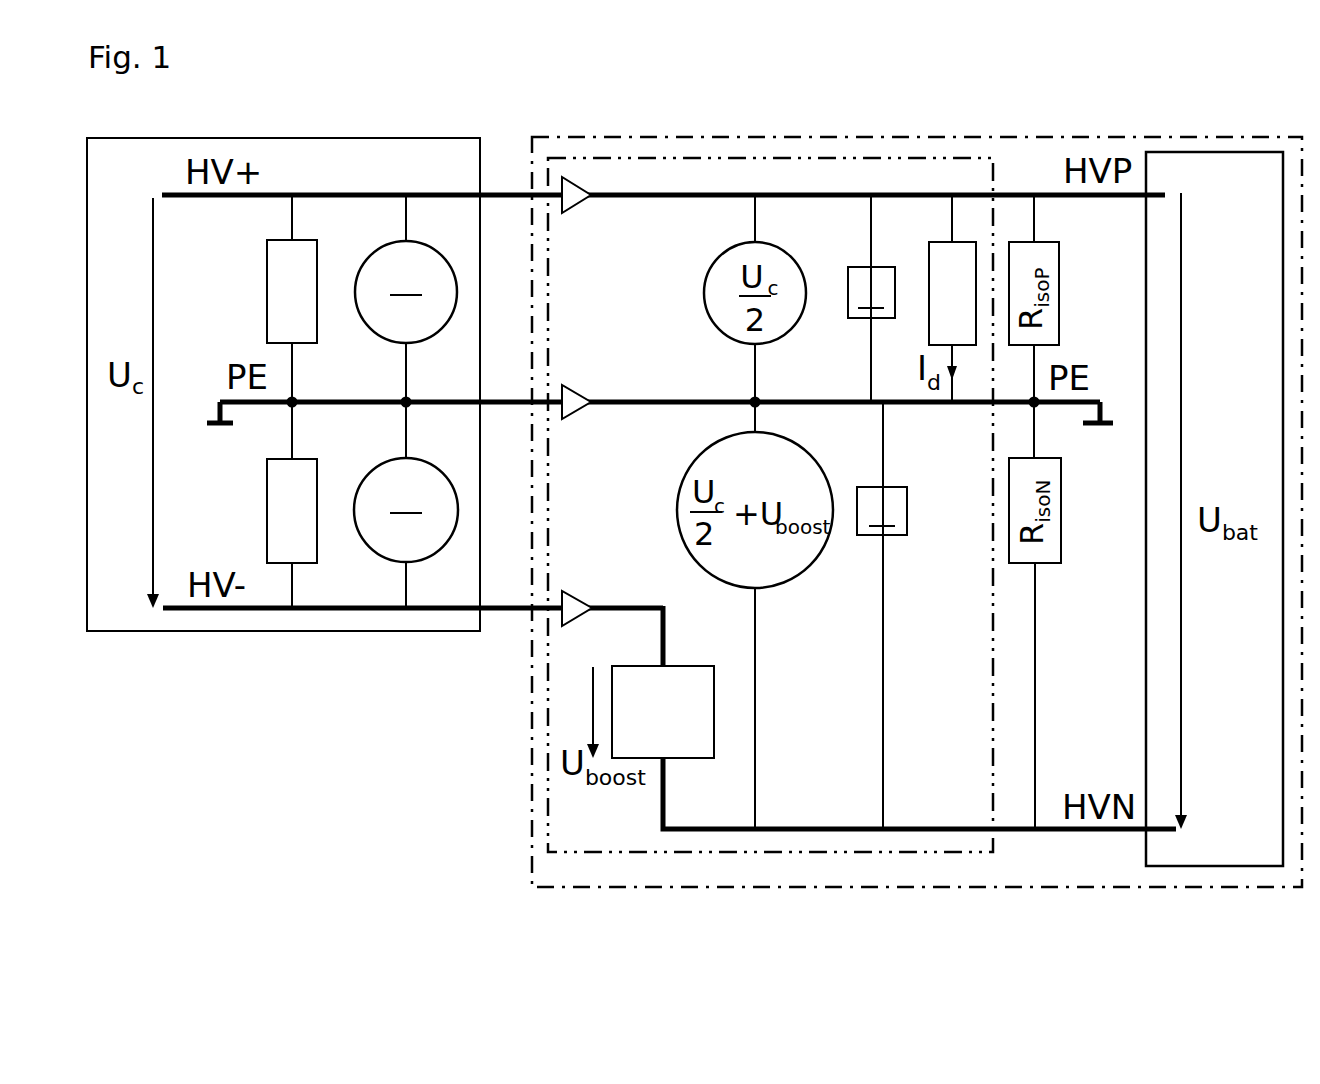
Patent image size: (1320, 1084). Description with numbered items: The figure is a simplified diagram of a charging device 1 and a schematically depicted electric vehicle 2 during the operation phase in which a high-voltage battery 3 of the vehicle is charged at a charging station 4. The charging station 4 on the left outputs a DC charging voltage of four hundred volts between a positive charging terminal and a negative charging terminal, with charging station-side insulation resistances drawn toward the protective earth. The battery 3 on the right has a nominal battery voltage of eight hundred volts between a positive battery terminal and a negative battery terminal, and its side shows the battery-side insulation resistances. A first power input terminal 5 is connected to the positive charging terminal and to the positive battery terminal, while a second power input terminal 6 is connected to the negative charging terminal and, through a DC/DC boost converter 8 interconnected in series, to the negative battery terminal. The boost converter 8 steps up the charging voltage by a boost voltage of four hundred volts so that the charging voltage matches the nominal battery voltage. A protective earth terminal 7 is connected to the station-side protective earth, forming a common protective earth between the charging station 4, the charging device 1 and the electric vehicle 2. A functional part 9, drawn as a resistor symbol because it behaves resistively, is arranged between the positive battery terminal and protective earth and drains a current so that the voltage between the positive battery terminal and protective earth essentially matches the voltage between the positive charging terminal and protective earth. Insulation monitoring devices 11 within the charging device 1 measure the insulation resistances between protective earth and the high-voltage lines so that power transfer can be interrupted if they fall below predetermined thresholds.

The charging device 1 is at (847, 852).
The electric vehicle 2 is at (1001, 887).
The high-voltage battery 3 is at (1250, 853).
The charging station 4 is at (282, 631).
The first power input terminal 5 is at (580, 197).
The second power input terminal 6 is at (577, 603).
The protective earth terminal 7 is at (580, 401).
The DC/DC boost converter 8 is at (654, 729).
The functional part 9 is at (957, 258).
The insulation monitoring device 11 is at (877, 512).